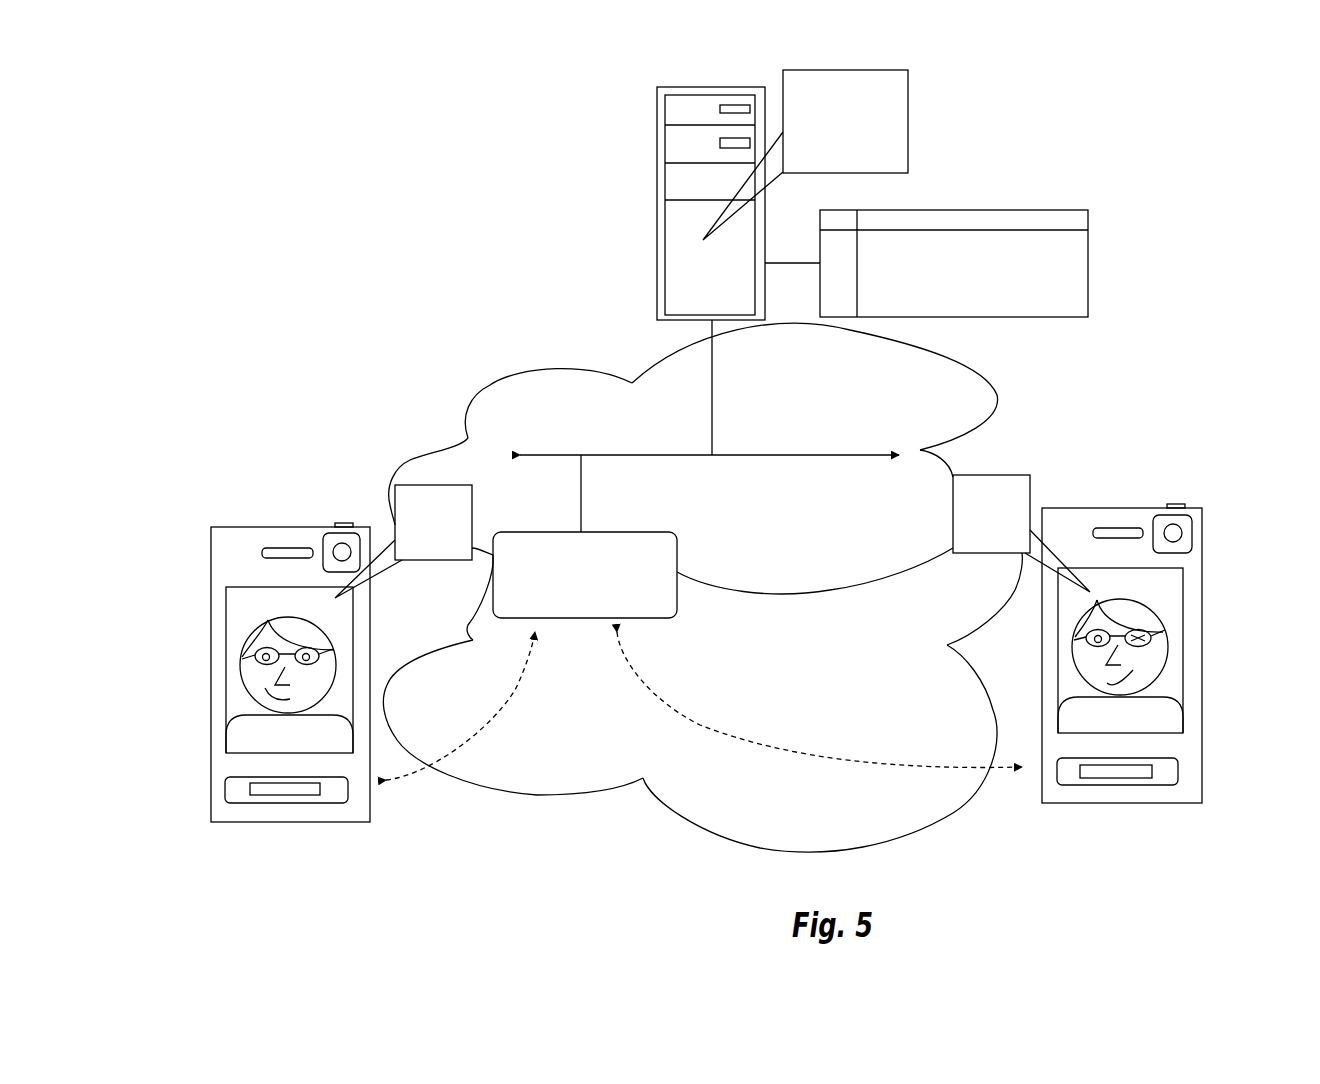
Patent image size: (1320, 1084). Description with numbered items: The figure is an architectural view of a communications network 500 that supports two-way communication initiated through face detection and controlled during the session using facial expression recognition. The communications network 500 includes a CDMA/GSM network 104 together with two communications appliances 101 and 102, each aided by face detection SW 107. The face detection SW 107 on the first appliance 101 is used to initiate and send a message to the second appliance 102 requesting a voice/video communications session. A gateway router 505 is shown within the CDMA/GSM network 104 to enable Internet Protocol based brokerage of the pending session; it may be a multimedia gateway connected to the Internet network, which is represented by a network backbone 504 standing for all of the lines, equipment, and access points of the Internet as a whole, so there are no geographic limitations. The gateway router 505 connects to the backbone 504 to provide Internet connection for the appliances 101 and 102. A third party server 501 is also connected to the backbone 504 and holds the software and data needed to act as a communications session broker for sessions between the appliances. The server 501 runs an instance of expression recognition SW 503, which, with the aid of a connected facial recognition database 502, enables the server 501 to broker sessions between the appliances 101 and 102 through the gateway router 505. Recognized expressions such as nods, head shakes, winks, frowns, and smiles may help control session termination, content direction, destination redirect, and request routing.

The communications network 500 is at (382, 264).
The third party server 501 is at (657, 178).
The facial recognition database 502 is at (1088, 252).
The expression recognition SW 503 is at (908, 132).
The network backbone 504 is at (768, 455).
The gateway router 505 is at (613, 532).
The face detection SW 107 is at (472, 520).
The communications appliance 101 is at (211, 615).
The communications appliance 102 is at (1203, 588).
The CDMA/GSM network 104 is at (633, 800).